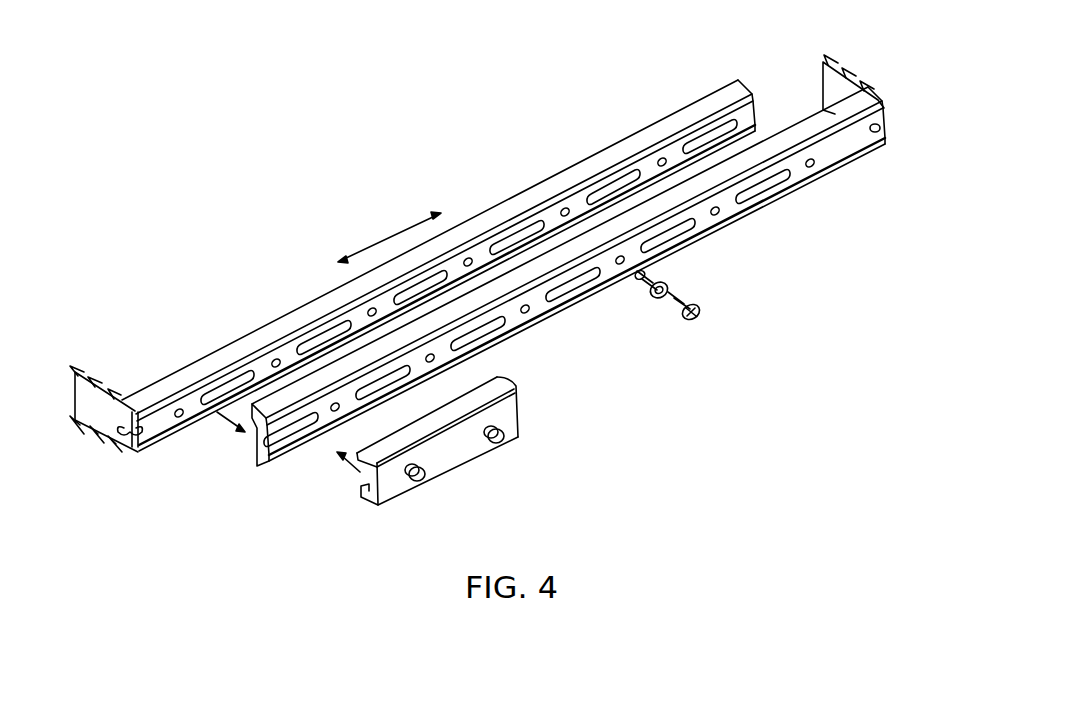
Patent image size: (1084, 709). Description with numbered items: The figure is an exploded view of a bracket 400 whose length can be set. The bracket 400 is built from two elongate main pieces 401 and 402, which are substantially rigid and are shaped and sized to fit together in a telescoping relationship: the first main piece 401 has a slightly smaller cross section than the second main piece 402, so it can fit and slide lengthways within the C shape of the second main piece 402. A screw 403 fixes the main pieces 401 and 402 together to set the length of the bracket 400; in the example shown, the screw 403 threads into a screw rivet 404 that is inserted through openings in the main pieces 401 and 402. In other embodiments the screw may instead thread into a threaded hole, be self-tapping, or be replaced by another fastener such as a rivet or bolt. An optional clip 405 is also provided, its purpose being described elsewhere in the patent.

The bracket 400 is at (190, 226).
The first main piece 401 is at (652, 132).
The second main piece 402 is at (736, 215).
The screw 403 is at (701, 313).
The screw rivet 404 is at (645, 283).
The clip 405 is at (475, 455).